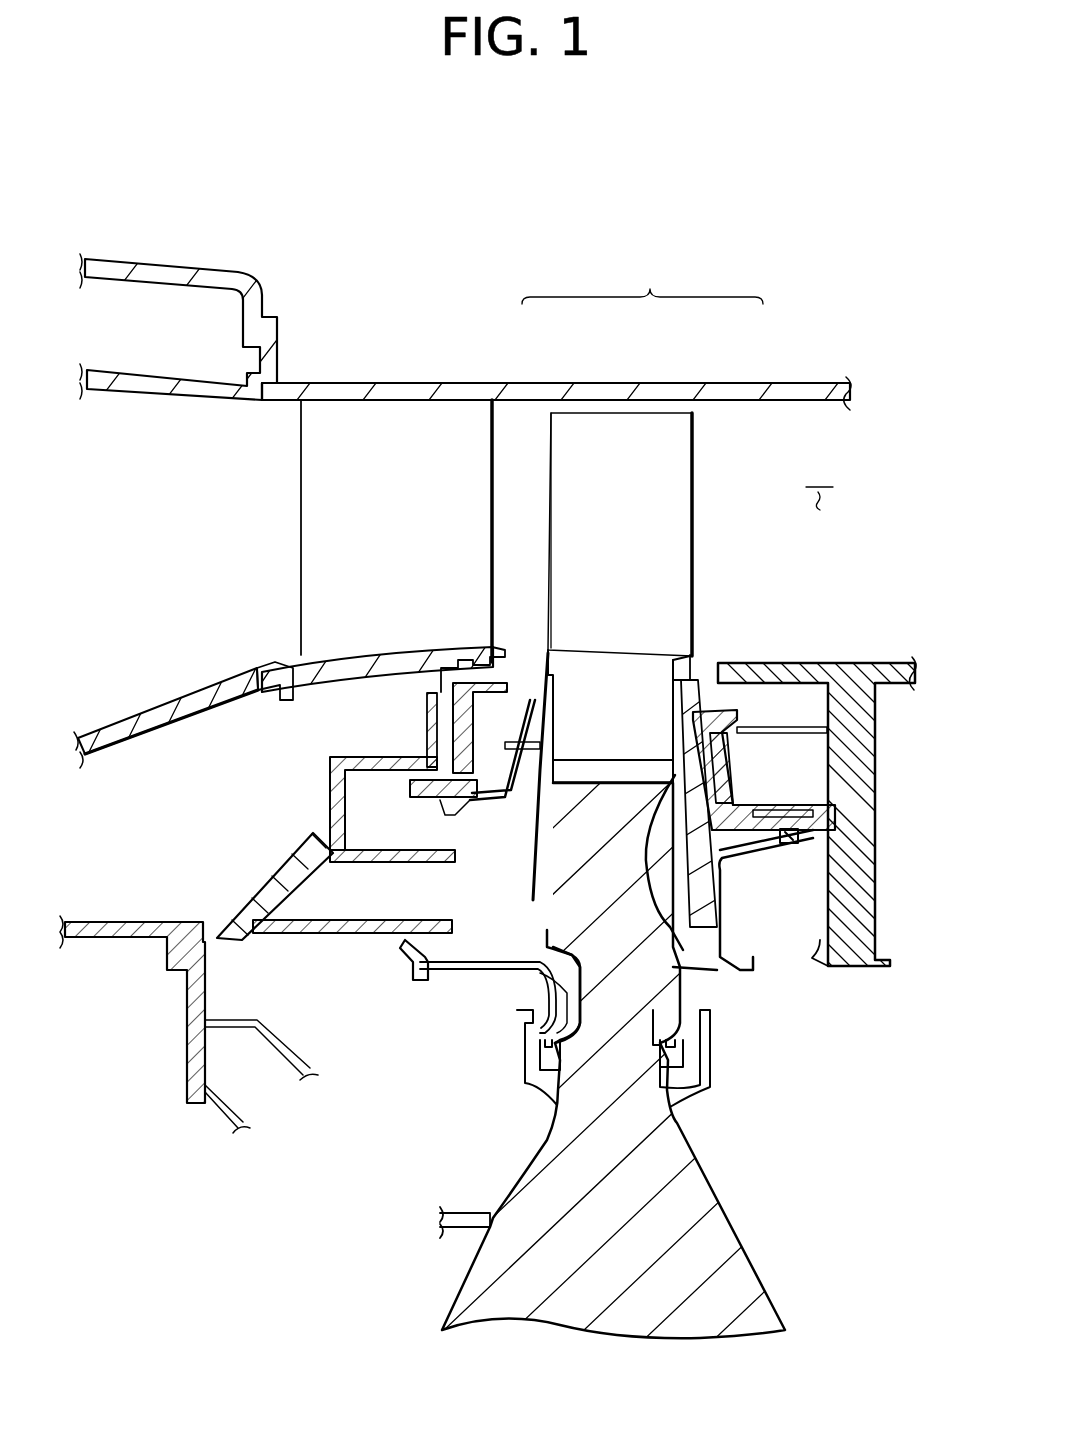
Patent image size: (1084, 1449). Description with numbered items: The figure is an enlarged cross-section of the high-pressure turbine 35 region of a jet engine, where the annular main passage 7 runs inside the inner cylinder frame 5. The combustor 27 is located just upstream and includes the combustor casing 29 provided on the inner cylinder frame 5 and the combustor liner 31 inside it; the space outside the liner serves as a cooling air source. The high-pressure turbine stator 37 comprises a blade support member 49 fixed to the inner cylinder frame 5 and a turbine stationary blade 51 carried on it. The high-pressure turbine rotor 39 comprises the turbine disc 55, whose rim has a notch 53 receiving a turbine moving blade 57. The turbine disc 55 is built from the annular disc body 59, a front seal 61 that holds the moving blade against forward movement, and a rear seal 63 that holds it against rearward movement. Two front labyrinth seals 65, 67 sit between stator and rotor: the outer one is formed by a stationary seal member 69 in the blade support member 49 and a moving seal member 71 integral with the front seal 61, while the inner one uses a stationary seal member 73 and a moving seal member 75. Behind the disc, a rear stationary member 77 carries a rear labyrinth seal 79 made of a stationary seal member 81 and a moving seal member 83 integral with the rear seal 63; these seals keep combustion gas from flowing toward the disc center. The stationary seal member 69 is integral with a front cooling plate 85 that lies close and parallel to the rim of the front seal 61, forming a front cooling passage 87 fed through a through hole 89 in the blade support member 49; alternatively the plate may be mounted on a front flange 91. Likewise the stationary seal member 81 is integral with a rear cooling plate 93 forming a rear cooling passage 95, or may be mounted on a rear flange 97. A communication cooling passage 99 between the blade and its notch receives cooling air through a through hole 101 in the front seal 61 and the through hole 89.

The inner cylinder frame 5 is at (832, 378).
The main passage 7 is at (819, 478).
The combustor 27 is at (176, 258).
The combustor casing 29 is at (140, 745).
The combustor liner 31 is at (120, 940).
The high-pressure turbine 35 is at (642, 273).
The high-pressure turbine stator 37 is at (512, 448).
The high-pressure turbine rotor 39 is at (708, 447).
The blade support member 49 is at (330, 770).
The turbine stationary blade 51 is at (312, 548).
The notch 53 is at (660, 820).
The turbine disc 55 is at (695, 1162).
The turbine moving blade 57 is at (676, 537).
The disc body 59 is at (730, 1213).
The front seal 61 is at (490, 990).
The rear seal 63 is at (718, 998).
The front labyrinth seal 65 is at (332, 808).
The front labyrinth seal 67 is at (375, 948).
The stationary seal member 69 is at (412, 788).
The moving seal member 71 is at (405, 800).
The stationary seal member 73 is at (380, 937).
The moving seal member 75 is at (402, 968).
The rear stationary member 77 is at (816, 958).
The rear labyrinth seal 79 is at (812, 835).
The stationary seal member 81 is at (878, 785).
The moving seal member 83 is at (775, 880).
The front cooling plate 85 is at (515, 740).
The front cooling passage 87 is at (555, 790).
The through hole 89 is at (295, 862).
The front flange 91 is at (476, 690).
The rear cooling plate 93 is at (738, 770).
The rear cooling passage 95 is at (672, 735).
The rear flange 97 is at (800, 740).
The communication cooling passage 99 is at (595, 785).
The through hole 101 is at (520, 870).